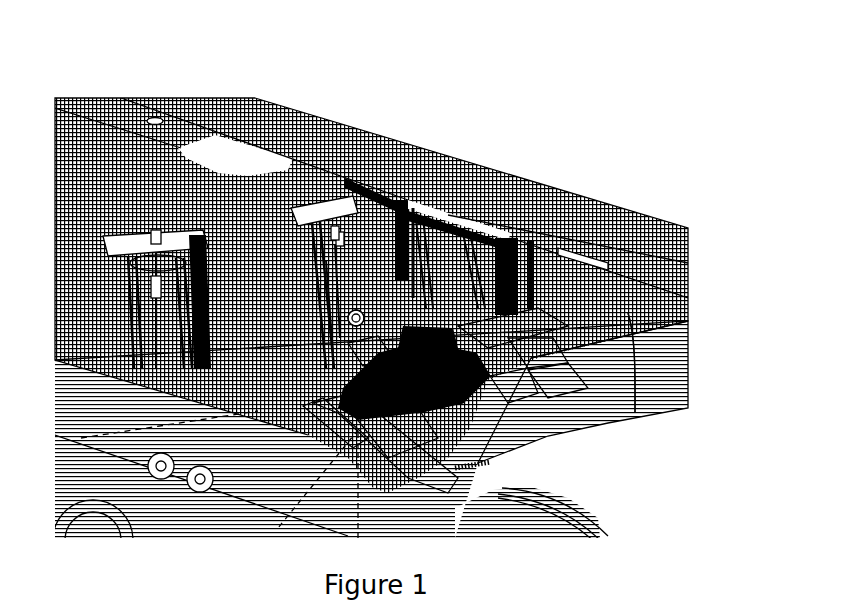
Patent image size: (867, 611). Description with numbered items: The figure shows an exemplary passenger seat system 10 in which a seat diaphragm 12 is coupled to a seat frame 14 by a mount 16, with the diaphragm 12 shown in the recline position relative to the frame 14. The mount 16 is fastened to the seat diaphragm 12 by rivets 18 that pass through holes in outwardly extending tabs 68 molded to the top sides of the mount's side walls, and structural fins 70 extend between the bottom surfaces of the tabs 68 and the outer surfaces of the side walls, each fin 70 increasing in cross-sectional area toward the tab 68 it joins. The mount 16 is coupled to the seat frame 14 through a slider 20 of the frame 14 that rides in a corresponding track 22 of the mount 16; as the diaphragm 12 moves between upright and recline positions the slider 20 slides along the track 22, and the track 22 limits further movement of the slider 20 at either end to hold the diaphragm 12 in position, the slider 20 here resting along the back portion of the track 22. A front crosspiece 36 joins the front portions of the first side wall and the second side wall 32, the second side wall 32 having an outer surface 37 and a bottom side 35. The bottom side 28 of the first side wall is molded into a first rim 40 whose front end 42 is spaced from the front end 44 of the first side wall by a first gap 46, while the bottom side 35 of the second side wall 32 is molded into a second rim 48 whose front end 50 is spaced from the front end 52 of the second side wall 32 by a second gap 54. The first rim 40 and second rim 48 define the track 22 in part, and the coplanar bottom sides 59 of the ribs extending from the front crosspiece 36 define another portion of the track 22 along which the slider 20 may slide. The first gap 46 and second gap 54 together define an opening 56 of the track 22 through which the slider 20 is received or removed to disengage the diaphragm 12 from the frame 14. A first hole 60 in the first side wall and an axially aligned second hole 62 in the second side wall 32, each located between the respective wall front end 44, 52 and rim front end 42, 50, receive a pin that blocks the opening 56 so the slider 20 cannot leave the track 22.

The passenger seat system 10 is at (656, 112).
The seat diaphragm 12 is at (497, 167).
The seat frame 14 is at (223, 483).
The mount 16 is at (656, 350).
The rivets 18 is at (343, 230).
The slider 20 is at (378, 422).
The track 22 is at (472, 320).
The bottom side 28 is at (395, 405).
The second side wall 32 is at (232, 338).
The bottom side 35 is at (310, 392).
The front crosspiece 36 is at (493, 237).
The outer surface 37 is at (218, 310).
The first rim 40 is at (433, 342).
The front end 42 is at (518, 447).
The front end 44 is at (532, 341).
The first gap 46 is at (506, 373).
The second rim 48 is at (418, 362).
The front end 50 is at (345, 340).
The front end 52 is at (408, 292).
The second gap 54 is at (376, 321).
The opening 56 is at (536, 378).
The bottom side 59 is at (447, 300).
The first hole 60 is at (605, 424).
The second hole 62 is at (340, 303).
The tabs 68 is at (560, 260).
The structural fins 70 is at (180, 343).